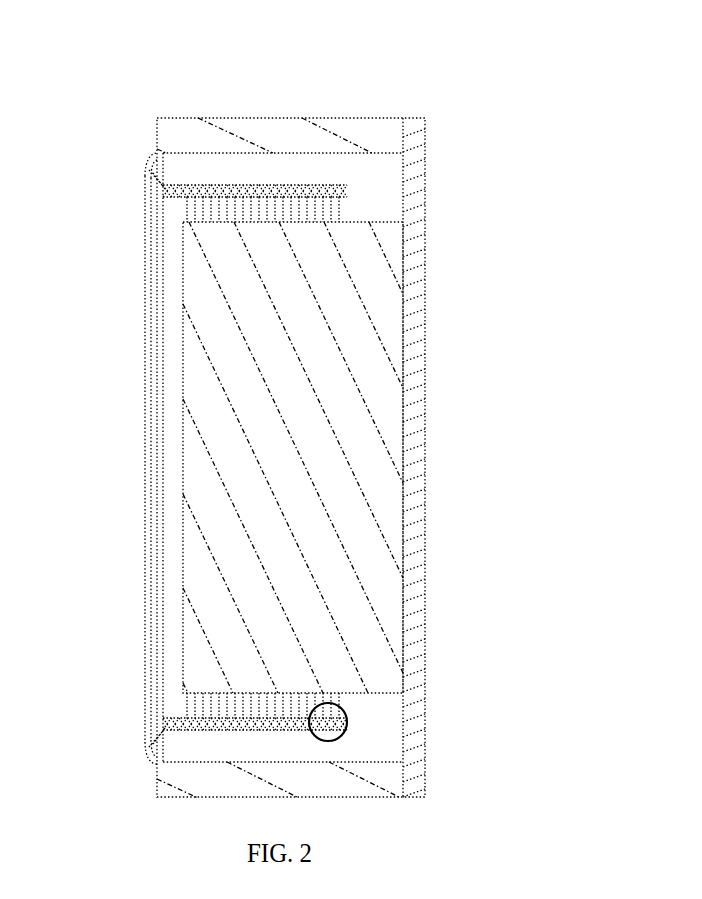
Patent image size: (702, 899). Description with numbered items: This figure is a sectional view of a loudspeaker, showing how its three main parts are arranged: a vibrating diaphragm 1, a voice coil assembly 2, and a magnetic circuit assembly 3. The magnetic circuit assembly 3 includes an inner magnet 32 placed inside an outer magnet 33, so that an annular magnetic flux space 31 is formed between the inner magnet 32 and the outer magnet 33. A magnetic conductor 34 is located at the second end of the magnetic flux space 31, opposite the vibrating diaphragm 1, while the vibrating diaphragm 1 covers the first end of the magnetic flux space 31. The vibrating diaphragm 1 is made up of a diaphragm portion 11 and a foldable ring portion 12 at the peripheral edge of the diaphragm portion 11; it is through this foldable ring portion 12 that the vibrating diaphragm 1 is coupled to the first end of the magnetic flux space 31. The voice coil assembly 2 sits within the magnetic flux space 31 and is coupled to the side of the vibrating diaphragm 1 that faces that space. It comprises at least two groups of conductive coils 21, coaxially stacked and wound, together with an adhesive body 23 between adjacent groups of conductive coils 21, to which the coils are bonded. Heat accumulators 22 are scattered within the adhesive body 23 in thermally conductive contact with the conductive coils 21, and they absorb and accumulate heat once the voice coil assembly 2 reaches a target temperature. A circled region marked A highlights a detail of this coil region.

The vibrating diaphragm 1 is at (68, 178).
The diaphragm portion 11 is at (160, 353).
The foldable ring portion 12 is at (148, 172).
The voice coil assembly 2 is at (325, 54).
The conductive coils 21 is at (203, 190).
The heat accumulator 22 is at (217, 190).
The adhesive body 23 is at (250, 190).
The magnetic circuit assembly 3 is at (537, 83).
The magnetic flux space 31 is at (360, 180).
The inner magnet 32 is at (370, 273).
The outer magnet 33 is at (370, 145).
The magnetic conductor 34 is at (412, 202).
The detail region A is at (348, 722).